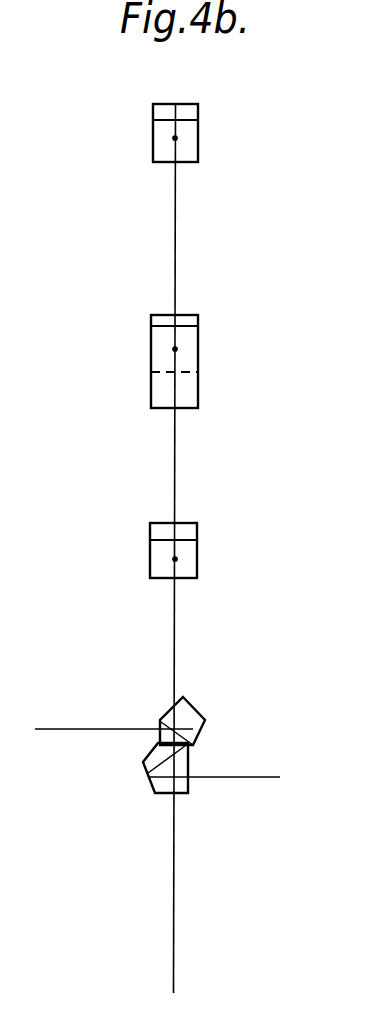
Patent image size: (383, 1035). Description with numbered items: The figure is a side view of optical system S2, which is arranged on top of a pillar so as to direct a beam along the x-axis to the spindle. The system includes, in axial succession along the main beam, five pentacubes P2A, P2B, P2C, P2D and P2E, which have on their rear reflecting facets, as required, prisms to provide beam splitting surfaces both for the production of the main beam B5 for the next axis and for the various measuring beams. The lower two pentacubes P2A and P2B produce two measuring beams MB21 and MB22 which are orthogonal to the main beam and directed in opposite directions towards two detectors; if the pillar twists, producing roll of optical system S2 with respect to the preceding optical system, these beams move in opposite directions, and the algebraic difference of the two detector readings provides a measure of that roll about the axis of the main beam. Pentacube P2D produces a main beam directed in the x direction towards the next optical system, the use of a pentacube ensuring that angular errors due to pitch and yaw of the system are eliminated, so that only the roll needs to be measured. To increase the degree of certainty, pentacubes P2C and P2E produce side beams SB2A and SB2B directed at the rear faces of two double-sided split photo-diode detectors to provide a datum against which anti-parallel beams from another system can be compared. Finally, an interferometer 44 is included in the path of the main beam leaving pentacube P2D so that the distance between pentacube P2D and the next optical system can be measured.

The pentacube P2E is at (198, 135).
The side beam SB2B is at (175, 138).
The pentacube P2D is at (198, 351).
The main beam B5 is at (175, 349).
The interferometer 44 is at (197, 408).
The pentacube P2C is at (197, 560).
The side beam SB2A is at (175, 559).
The pentacube P2B is at (205, 720).
The measuring beam MB22 is at (121, 729).
The pentacube P2A is at (156, 793).
The measuring beam MB21 is at (213, 777).